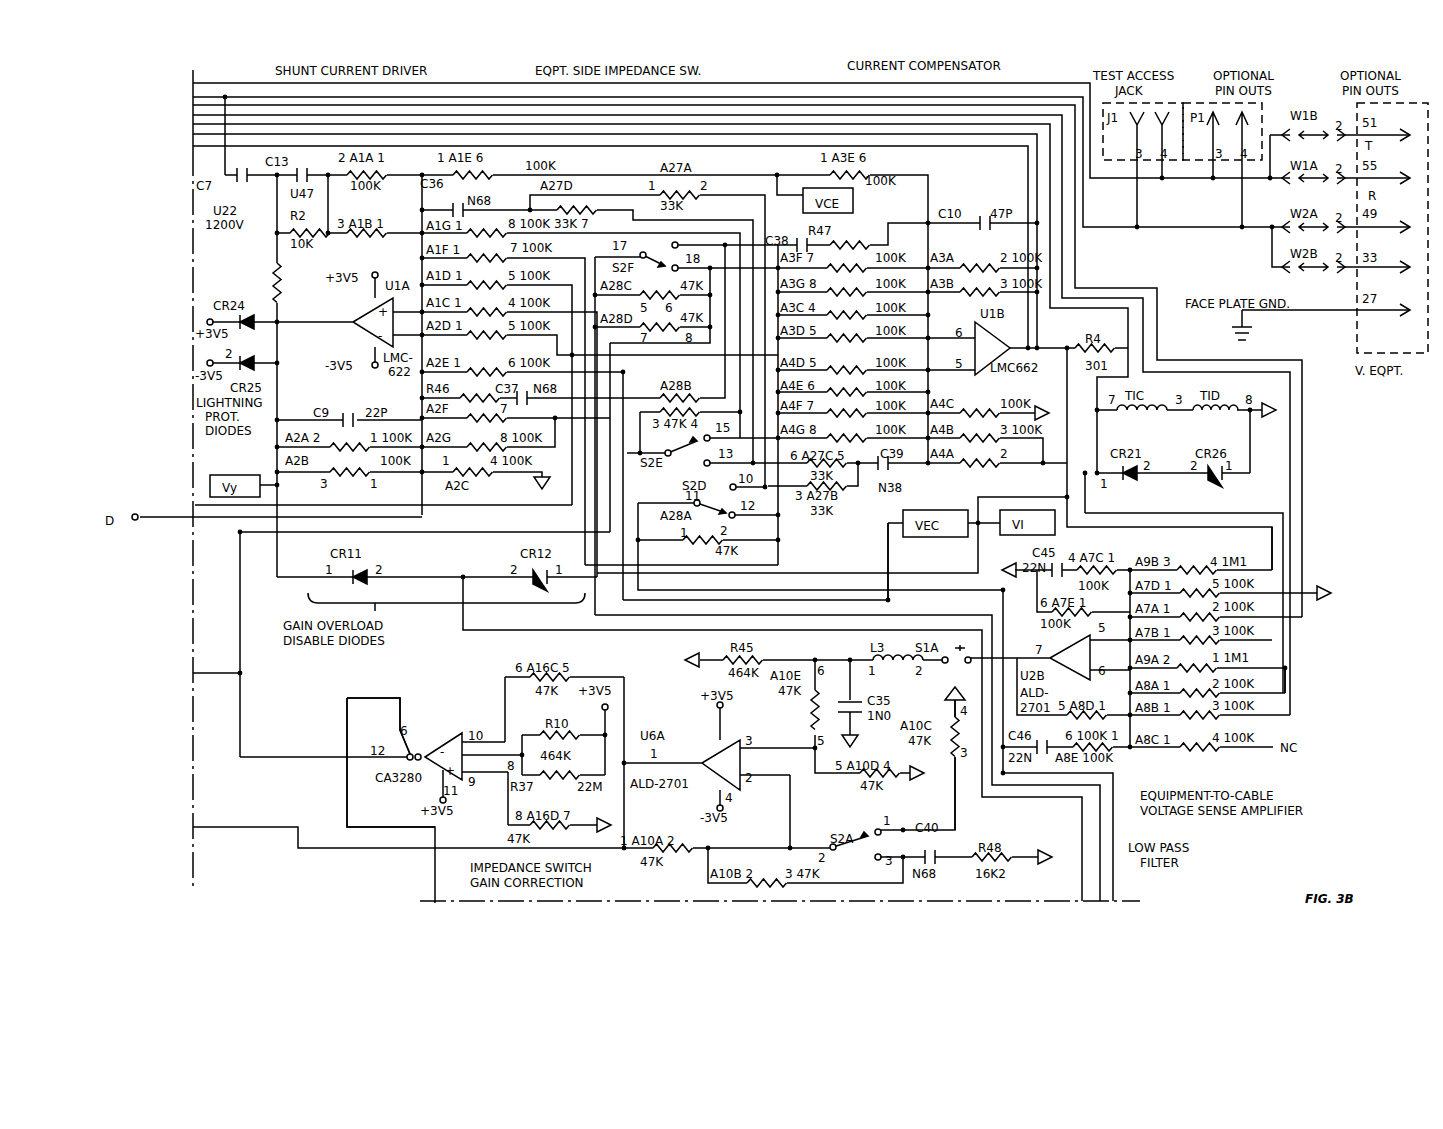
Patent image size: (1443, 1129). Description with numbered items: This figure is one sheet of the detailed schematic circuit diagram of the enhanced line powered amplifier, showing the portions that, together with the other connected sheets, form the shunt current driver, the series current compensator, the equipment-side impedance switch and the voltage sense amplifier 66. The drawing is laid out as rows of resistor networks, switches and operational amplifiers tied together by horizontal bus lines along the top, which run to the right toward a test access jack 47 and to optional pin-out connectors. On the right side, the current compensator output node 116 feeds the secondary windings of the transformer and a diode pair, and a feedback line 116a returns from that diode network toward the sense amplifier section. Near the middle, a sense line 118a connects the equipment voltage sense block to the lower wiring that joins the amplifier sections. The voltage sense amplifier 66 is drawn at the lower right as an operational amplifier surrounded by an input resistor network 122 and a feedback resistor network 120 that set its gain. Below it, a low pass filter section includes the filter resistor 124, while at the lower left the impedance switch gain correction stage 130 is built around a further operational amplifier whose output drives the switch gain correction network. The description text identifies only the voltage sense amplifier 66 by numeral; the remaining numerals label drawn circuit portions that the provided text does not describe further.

The current compensator output node 116 is at (1085, 315).
The feedback line 116a is at (1218, 513).
The VEC sense line 118a is at (888, 558).
The equipment-to-cable voltage sense amplifier feedback 120 is at (1295, 693).
The sense amplifier input network 122 is at (1305, 570).
The low pass filter resistor 124 is at (951, 751).
The impedance switch gain correction amplifier 130 is at (347, 740).
The voltage sense amplifier 66 is at (1360, 520).
The test access jack 47 is at (1143, 155).